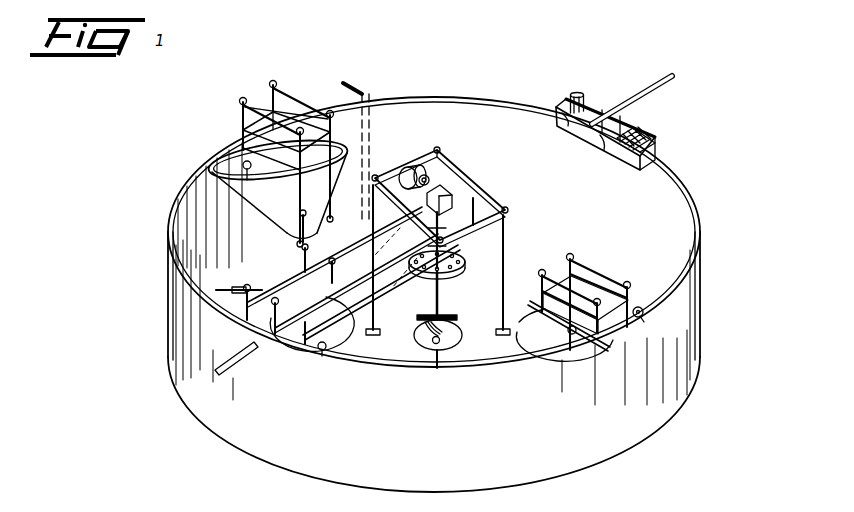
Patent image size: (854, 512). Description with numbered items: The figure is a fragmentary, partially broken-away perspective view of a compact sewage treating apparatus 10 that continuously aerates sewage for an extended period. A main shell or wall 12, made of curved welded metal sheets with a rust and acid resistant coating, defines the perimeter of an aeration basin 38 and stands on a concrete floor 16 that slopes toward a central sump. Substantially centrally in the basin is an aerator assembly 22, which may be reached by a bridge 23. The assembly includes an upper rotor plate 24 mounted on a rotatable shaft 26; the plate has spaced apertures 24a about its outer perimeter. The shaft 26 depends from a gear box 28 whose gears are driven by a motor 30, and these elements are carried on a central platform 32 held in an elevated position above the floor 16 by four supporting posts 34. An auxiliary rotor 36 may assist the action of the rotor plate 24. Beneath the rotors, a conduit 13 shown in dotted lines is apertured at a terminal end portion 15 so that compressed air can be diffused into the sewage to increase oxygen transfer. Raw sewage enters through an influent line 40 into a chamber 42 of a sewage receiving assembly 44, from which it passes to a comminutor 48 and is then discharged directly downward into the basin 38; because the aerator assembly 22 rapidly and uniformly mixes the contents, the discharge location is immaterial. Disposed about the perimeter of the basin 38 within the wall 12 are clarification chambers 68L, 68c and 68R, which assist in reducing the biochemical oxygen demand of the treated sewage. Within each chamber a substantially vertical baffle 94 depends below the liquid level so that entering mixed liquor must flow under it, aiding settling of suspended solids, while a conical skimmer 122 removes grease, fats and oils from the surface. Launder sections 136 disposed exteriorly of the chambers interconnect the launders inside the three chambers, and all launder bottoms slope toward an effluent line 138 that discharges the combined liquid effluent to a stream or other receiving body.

The sewage treating apparatus 10 is at (445, 264).
The main shell or wall 12 is at (676, 175).
The conduit 13 is at (372, 130).
The terminal end portion 15 is at (424, 322).
The concrete floor 16 is at (545, 249).
The aerator assembly 22 is at (420, 165).
The bridge 23 is at (354, 273).
The upper rotor plate 24 is at (458, 259).
The spaced apertures 24a is at (462, 262).
The rotatable shaft 26 is at (445, 303).
The gear box 28 is at (450, 190).
The motor 30 is at (425, 175).
The central platform 32 is at (464, 193).
The supporting posts 34 is at (325, 207).
The auxiliary rotor 36 is at (462, 326).
The aeration basin 38 is at (641, 230).
The influent line 40 is at (648, 92).
The chamber 42 is at (605, 108).
The sewage receiving assembly 44 is at (632, 107).
The comminutor 48 is at (583, 92).
The clarification chamber 68L is at (296, 206).
The clarification chamber 68c is at (360, 346).
The clarification chamber 68R is at (630, 282).
The baffle 94 is at (236, 290).
The conical skimmer 122 is at (644, 322).
The launder sections 136 is at (222, 223).
The effluent line 138 is at (238, 358).